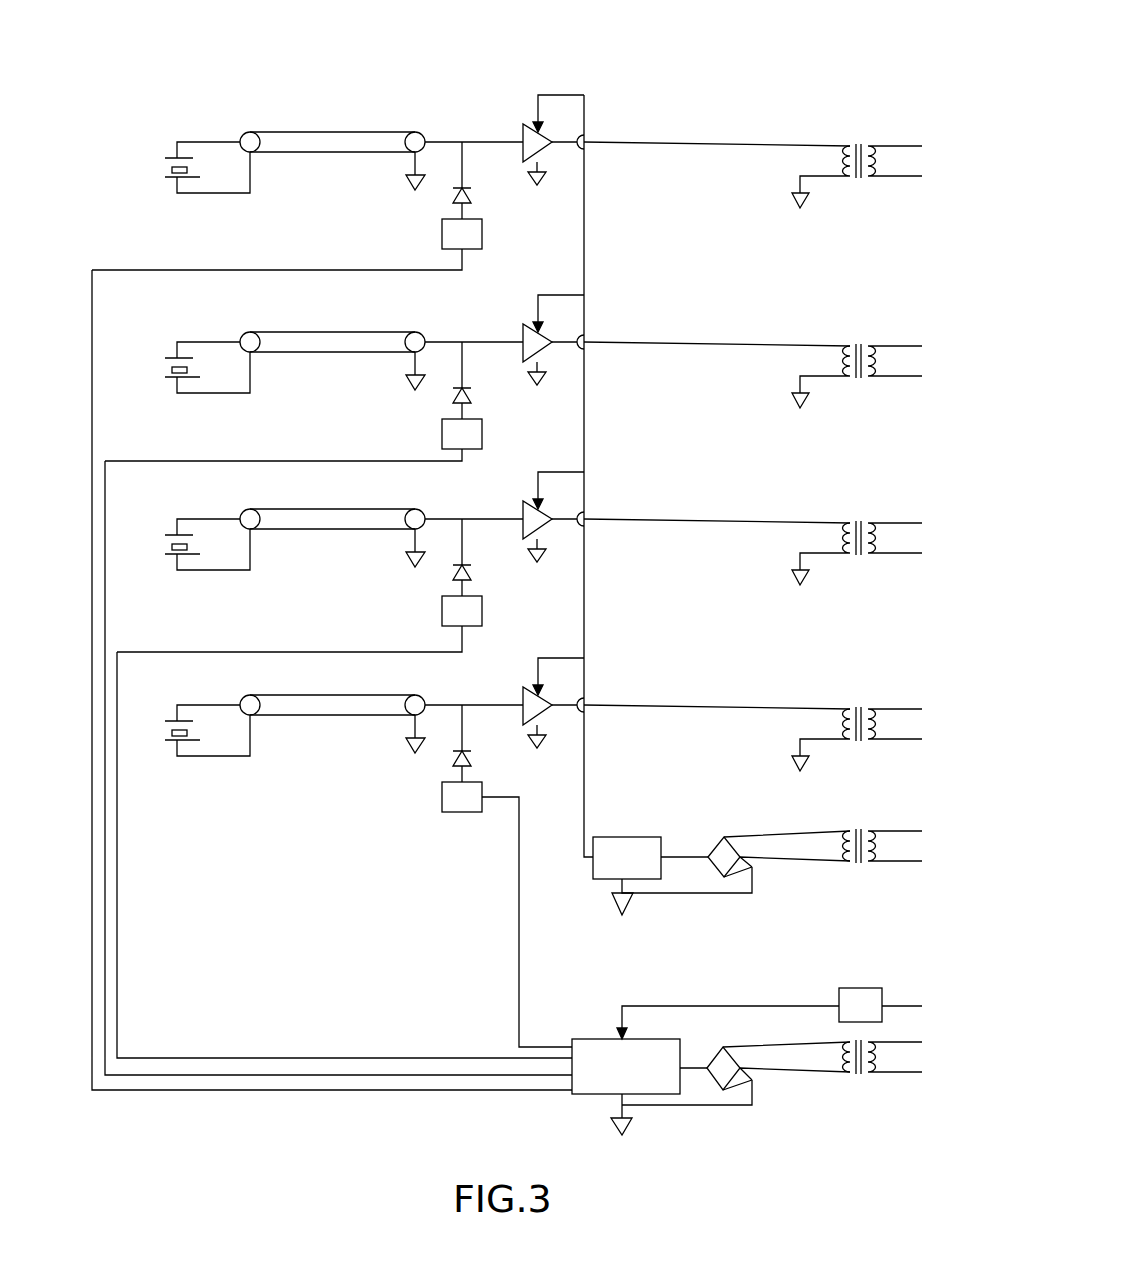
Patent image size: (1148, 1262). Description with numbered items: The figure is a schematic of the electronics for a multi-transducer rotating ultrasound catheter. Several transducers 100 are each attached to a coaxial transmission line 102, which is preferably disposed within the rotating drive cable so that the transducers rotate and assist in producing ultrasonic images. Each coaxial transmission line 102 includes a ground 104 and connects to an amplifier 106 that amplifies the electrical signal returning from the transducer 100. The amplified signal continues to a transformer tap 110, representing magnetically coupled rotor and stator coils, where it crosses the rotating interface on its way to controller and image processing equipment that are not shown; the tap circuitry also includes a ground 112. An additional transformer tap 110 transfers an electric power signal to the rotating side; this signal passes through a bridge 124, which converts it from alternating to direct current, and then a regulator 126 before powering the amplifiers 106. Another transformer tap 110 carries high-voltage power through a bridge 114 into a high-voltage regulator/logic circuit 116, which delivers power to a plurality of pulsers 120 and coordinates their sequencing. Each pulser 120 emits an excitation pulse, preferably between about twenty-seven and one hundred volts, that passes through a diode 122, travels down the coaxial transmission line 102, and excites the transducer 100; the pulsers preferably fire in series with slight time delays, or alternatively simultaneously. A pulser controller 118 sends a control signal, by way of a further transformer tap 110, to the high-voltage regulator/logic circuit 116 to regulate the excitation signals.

The transducer 100 is at (153, 174).
The coaxial transmission line 102 is at (322, 138).
The ground 104 is at (407, 184).
The amplifier 106 is at (522, 125).
The transformer tap 110 is at (869, 127).
The ground 112 is at (805, 206).
The bridge 114 is at (723, 1090).
The high-voltage regulator/logic circuit 116 is at (587, 1039).
The pulser controller 118 is at (852, 988).
The pulser 120 is at (482, 600).
The diode 122 is at (453, 569).
The bridge 124 is at (715, 842).
The regulator 126 is at (620, 837).